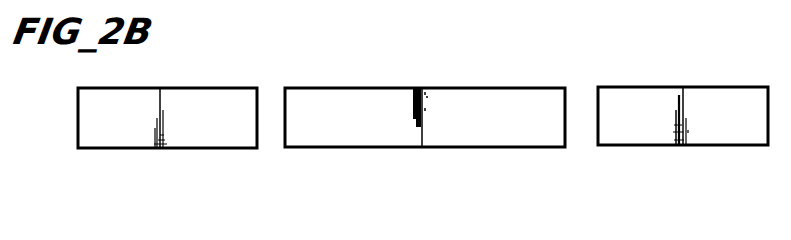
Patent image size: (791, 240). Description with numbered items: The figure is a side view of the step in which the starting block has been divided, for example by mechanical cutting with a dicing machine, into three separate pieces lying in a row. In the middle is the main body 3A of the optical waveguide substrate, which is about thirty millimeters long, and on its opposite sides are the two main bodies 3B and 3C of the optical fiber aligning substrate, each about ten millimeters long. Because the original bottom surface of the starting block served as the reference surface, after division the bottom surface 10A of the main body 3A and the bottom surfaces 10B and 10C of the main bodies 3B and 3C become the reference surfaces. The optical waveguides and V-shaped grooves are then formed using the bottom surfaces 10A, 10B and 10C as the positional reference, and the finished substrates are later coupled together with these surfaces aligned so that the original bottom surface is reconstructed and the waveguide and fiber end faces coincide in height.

The main body of the optical waveguide substrate 3A is at (463, 103).
The main body of the optical fiber aligning substrate 3B is at (182, 98).
The main body of the optical fiber aligning substrate 3C is at (708, 98).
The bottom surface of the main body 3A 10A is at (490, 147).
The bottom surface of the main body 3B 10B is at (188, 148).
The bottom surface of the main body 3C 10C is at (727, 145).